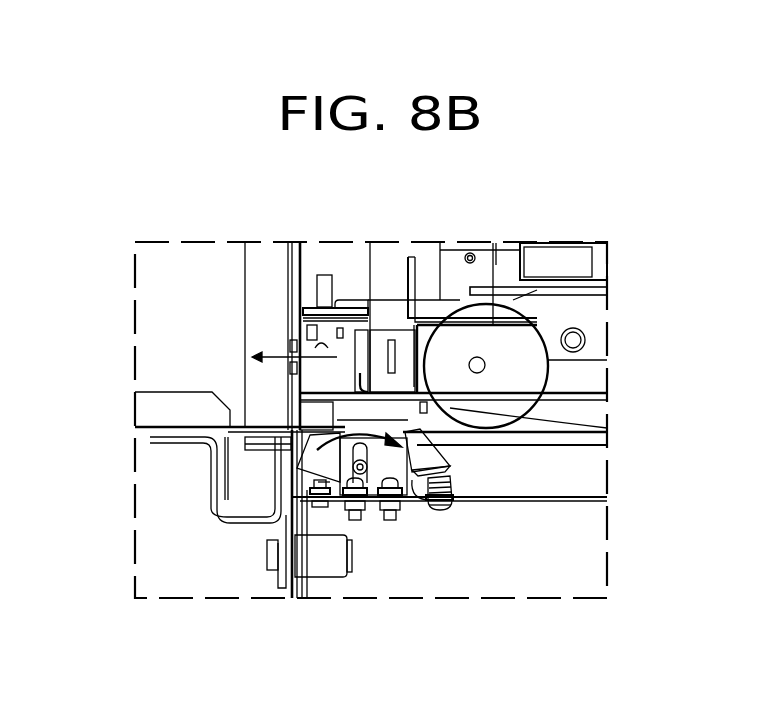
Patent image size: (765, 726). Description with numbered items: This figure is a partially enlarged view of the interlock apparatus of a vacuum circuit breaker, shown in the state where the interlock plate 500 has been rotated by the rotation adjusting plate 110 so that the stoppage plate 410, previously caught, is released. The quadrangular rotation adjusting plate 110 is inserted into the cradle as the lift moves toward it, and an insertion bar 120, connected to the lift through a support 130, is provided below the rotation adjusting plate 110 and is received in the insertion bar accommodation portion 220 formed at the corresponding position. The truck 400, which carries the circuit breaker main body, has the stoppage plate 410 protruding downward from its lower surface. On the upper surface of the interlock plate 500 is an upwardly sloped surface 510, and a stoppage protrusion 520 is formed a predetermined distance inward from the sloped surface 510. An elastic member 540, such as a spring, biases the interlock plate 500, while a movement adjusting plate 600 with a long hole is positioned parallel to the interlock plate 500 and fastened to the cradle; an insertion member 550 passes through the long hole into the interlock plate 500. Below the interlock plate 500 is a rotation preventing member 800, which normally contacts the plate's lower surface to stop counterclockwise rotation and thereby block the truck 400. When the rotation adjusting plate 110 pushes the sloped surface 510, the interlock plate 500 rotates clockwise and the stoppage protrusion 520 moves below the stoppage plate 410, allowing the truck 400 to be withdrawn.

The rotation adjusting plate 110 is at (240, 430).
The insertion bar 120 is at (275, 553).
The support 130 is at (213, 484).
The insertion bar accommodation portion 220 is at (333, 562).
The truck 400 is at (430, 405).
The stoppage plate 410 is at (607, 428).
The interlock plate 500 is at (395, 442).
The sloped surface 510 is at (383, 427).
The stoppage protrusion 520 is at (410, 440).
The elastic member 540 is at (417, 447).
The insertion member 550 is at (345, 487).
The movement adjusting plate 600 is at (372, 470).
The rotation preventing member 800 is at (297, 490).